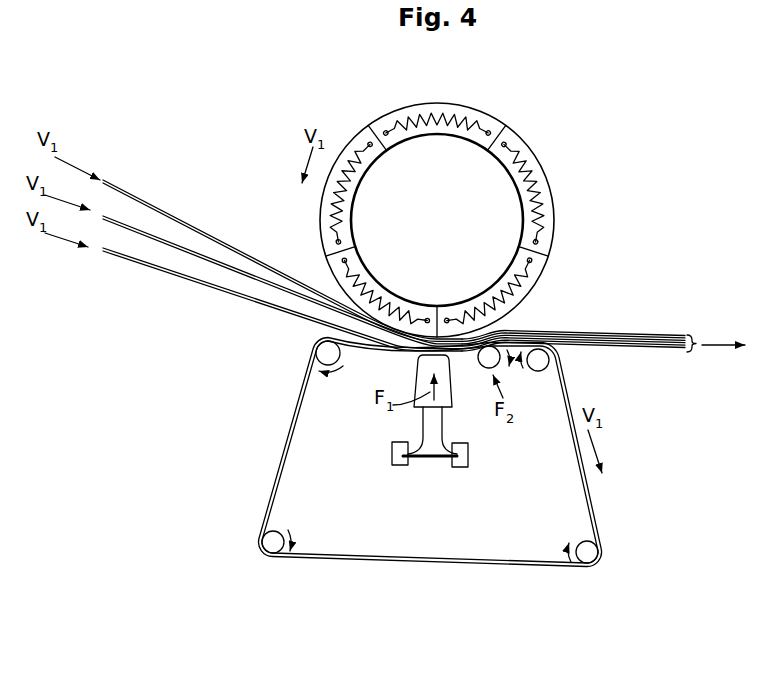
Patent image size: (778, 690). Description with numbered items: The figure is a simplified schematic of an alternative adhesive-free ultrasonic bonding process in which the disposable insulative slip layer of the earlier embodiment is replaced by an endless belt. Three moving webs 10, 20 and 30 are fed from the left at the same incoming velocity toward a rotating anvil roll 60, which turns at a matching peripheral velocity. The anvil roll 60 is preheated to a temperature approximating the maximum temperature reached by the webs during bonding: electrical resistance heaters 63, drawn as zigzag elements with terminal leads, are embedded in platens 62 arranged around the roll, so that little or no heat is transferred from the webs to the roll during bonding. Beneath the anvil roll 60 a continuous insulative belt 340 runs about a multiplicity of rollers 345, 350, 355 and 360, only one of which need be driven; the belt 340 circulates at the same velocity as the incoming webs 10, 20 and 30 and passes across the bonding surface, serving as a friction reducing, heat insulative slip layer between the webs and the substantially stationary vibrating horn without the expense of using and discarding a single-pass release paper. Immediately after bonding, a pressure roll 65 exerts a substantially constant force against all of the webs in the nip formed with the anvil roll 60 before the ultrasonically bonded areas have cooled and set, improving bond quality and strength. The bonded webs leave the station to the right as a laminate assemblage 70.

The moving web 10 is at (157, 207).
The moving web 20 is at (188, 249).
The moving web 30 is at (155, 268).
The anvil roll 60 is at (545, 157).
The platens 62 is at (506, 142).
The electrical resistance heaters 63 is at (370, 142).
The pressure roll 65 is at (488, 369).
The assemblage 70 is at (696, 338).
The continuous insulative belt 340 is at (560, 381).
The roller 345 is at (278, 533).
The roller 350 is at (339, 359).
The roller 355 is at (540, 372).
The roller 360 is at (583, 541).